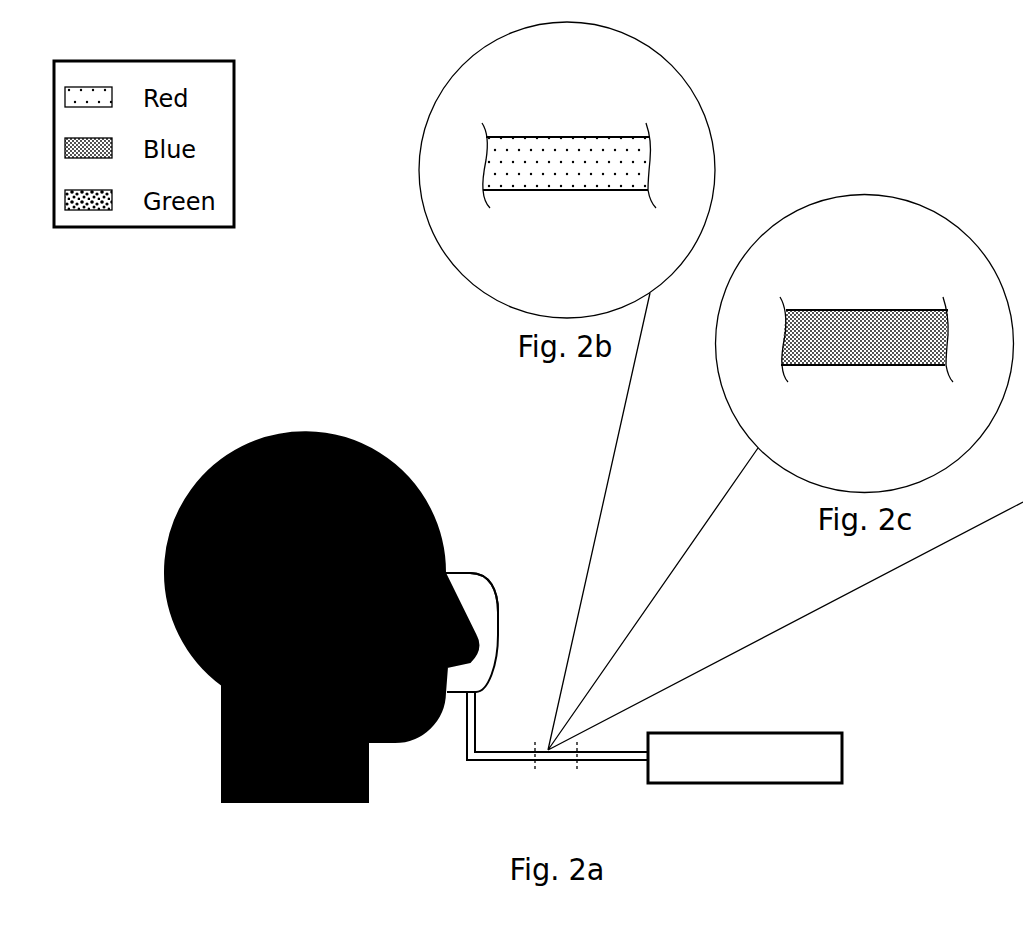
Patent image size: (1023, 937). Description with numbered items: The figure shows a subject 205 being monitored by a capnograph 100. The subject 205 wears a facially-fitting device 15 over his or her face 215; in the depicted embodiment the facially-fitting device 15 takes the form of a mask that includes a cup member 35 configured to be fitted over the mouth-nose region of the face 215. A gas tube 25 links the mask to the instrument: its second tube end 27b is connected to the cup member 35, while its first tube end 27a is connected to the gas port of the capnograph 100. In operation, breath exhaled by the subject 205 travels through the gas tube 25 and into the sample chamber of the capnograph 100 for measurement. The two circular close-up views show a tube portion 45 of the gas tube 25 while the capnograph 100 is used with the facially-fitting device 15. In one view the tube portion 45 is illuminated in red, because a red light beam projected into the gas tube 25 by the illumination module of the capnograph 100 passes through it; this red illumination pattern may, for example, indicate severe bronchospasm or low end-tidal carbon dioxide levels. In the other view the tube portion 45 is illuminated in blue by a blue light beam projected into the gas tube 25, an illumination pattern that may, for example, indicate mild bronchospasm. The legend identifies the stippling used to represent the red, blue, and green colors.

In FIG. 2a, the subject 205 is at (188, 395).
In FIG. 2a, the face 215 is at (460, 527).
In FIG. 2a, the cup member 35 is at (490, 592).
In FIG. 2a, the facially-fitting device 15 is at (531, 571).
In FIG. 2a, the gas tube 25 is at (510, 762).
In FIG. 2a, the second tube end 27b is at (466, 696).
In FIG. 2a, the first tube end 27a is at (640, 768).
In FIG. 2a, the tube portion 45 is at (549, 762).
In FIG. 2b, the tube portion 45 is at (566, 123).
In FIG. 2c, the tube portion 45 is at (864, 300).
In FIG. 2a, the capnograph 100 is at (800, 785).